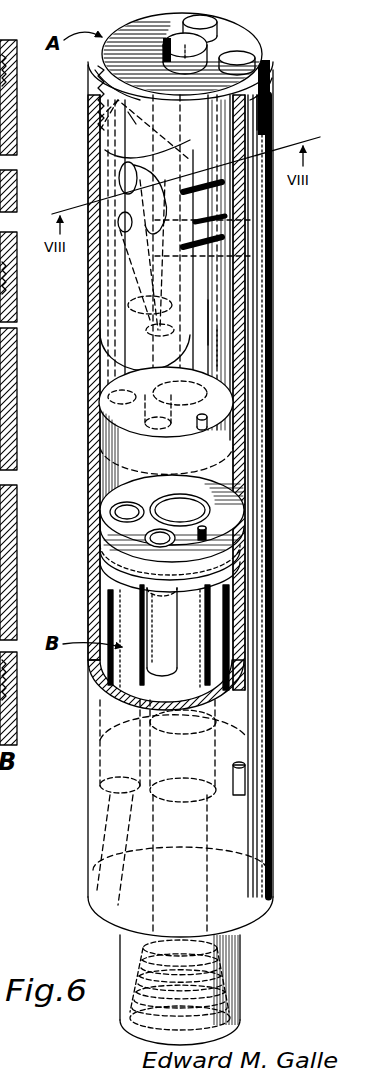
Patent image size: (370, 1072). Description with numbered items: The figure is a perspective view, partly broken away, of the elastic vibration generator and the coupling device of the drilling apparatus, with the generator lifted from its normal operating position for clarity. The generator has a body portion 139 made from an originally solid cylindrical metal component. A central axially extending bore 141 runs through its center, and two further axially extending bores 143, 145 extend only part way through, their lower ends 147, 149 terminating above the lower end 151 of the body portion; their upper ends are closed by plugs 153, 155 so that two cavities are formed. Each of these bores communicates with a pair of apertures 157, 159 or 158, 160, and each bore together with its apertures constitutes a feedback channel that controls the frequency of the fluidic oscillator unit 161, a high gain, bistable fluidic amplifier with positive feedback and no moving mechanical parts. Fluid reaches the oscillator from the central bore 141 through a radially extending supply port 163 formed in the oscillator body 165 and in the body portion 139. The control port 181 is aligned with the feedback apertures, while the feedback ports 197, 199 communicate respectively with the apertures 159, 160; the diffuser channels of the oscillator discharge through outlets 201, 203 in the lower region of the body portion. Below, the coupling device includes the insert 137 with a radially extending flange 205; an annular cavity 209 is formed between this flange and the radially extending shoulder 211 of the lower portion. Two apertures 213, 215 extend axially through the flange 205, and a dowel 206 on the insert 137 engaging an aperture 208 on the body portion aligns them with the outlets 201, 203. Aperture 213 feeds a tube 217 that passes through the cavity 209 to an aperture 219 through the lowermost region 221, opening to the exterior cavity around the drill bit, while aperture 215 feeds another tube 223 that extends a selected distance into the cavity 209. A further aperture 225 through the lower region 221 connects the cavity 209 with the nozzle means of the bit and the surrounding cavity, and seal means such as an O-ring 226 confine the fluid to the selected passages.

The coupling component or insert 137 is at (212, 652).
The body portion 139 is at (115, 85).
The central axially extending bore 141 is at (182, 26).
The axially extending bore 143 is at (209, 33).
The axially extending bore 145 is at (264, 92).
The lower end of bore 147 is at (233, 322).
The lower end of bore 149 is at (245, 352).
The lower end of body portion 151 is at (122, 412).
The plug 153 is at (219, 24).
The plug 155 is at (252, 55).
The aperture 157 is at (270, 118).
The aperture 158 is at (274, 100).
The aperture 159 is at (238, 257).
The aperture 160 is at (232, 217).
The fluidic oscillator unit 161 is at (108, 296).
The supply port 163 is at (105, 135).
The body 165 is at (128, 108).
The control port 181 is at (118, 168).
The feedback port 197 is at (100, 318).
The feedback port 199 is at (96, 276).
The outlet 201 is at (105, 448).
The outlet 203 is at (108, 401).
The radially extending flange 205 is at (185, 480).
The dowel 206 is at (208, 532).
The aperture 208 is at (212, 418).
The annular cavity 209 is at (226, 630).
The radially extending shoulder 211 is at (235, 705).
The aperture 213 is at (127, 510).
The aperture 215 is at (157, 537).
The tube 217 is at (125, 616).
The aperture 219 is at (114, 831).
The lowermost region 221 is at (100, 868).
The tube 223 is at (182, 662).
The aperture 225 is at (260, 818).
The O-ring seal 226 is at (155, 577).